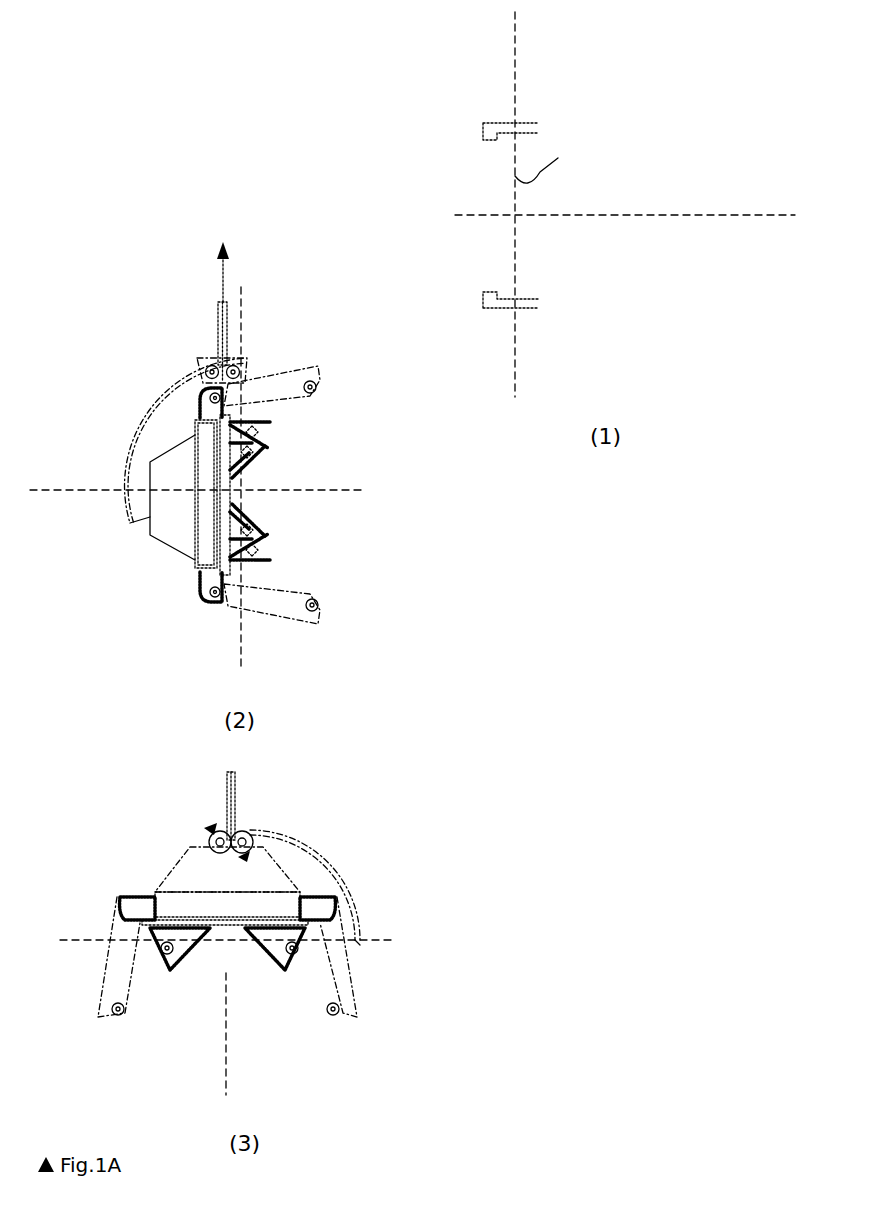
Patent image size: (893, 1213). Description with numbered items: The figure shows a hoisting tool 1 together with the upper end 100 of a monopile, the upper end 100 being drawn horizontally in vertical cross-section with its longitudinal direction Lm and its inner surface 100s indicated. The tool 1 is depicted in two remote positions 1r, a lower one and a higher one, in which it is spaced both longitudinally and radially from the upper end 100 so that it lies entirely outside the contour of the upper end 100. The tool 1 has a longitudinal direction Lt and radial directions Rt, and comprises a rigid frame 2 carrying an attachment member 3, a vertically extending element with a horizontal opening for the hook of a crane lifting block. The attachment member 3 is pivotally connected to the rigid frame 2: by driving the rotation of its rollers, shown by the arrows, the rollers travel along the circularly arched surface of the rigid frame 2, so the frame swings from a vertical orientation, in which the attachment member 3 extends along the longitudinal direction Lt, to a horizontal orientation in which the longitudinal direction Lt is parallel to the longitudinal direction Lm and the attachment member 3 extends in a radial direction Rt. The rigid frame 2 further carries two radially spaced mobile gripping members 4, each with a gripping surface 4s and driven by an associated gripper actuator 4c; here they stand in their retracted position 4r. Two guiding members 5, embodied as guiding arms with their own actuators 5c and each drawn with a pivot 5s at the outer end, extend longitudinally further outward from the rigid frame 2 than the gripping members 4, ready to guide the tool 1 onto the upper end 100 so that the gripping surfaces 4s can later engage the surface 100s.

The upper end 100 is at (562, 86).
The surface 100s is at (497, 136).
The longitudinal direction Lm is at (678, 215).
The hoisting tool 1 is at (124, 288).
The remote positions 1r is at (153, 776).
The rigid frame 2 is at (195, 560).
The attachment member 3 is at (218, 338).
The gripping members 4 is at (262, 428).
The gripping surface 4s is at (266, 424).
The retracted position 4r is at (253, 447).
The gripper actuators 4c is at (238, 467).
The guiding members 5 is at (317, 373).
The arm shaft 5s is at (320, 392).
The actuators 5c is at (322, 402).
The longitudinal direction Lt is at (108, 489).
The radial directions Rt is at (242, 320).